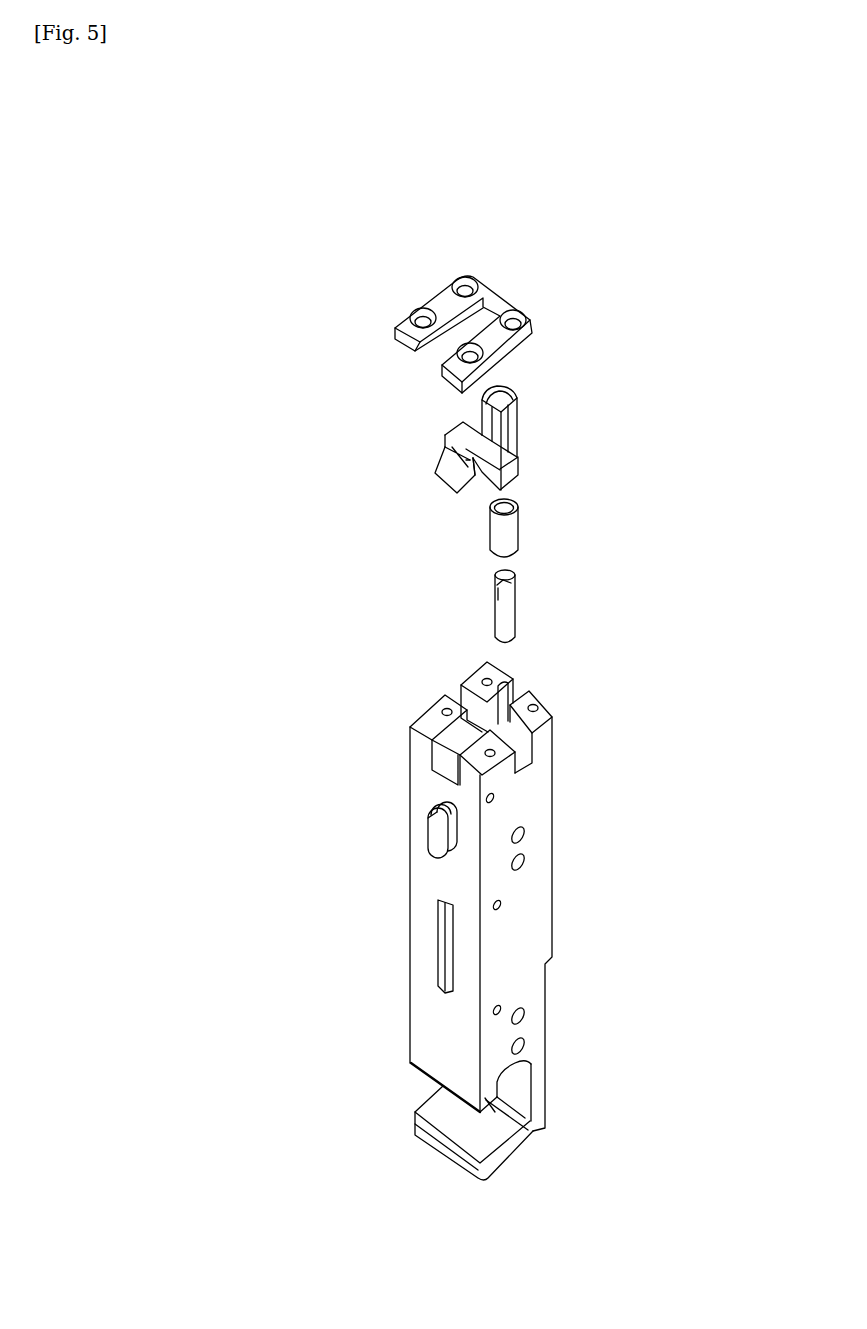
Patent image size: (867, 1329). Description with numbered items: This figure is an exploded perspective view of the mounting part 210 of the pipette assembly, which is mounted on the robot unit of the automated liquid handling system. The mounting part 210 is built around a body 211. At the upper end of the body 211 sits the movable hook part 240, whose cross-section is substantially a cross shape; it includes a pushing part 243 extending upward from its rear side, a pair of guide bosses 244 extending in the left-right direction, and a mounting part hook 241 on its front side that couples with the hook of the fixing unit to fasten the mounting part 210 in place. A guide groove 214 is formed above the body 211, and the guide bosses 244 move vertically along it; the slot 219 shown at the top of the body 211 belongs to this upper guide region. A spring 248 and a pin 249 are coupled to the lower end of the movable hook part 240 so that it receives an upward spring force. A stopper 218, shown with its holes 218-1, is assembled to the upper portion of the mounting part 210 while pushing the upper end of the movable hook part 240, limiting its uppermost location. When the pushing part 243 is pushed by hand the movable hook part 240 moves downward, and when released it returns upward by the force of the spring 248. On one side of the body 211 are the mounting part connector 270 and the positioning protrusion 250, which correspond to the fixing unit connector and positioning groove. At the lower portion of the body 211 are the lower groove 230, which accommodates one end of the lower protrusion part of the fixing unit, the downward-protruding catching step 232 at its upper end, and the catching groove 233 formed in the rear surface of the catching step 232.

The mounting part 210 is at (591, 198).
The stopper 218 is at (437, 294).
The fastening holes 218-1 is at (465, 279).
The movable hook part 240 is at (527, 453).
The mounting part hook 241 is at (452, 465).
The pushing part 243 is at (520, 412).
The guide boss 244 is at (460, 436).
The spring 248 is at (510, 528).
The pin 249 is at (508, 600).
The mounting slot 219 is at (512, 720).
The guide groove 214 is at (532, 764).
The body 211 is at (537, 913).
The positioning protrusion 250 is at (447, 828).
The mounting part connector 270 is at (440, 948).
The lower groove 230 is at (423, 1090).
The catching step 232 is at (490, 1105).
The catching groove 233 is at (518, 1076).